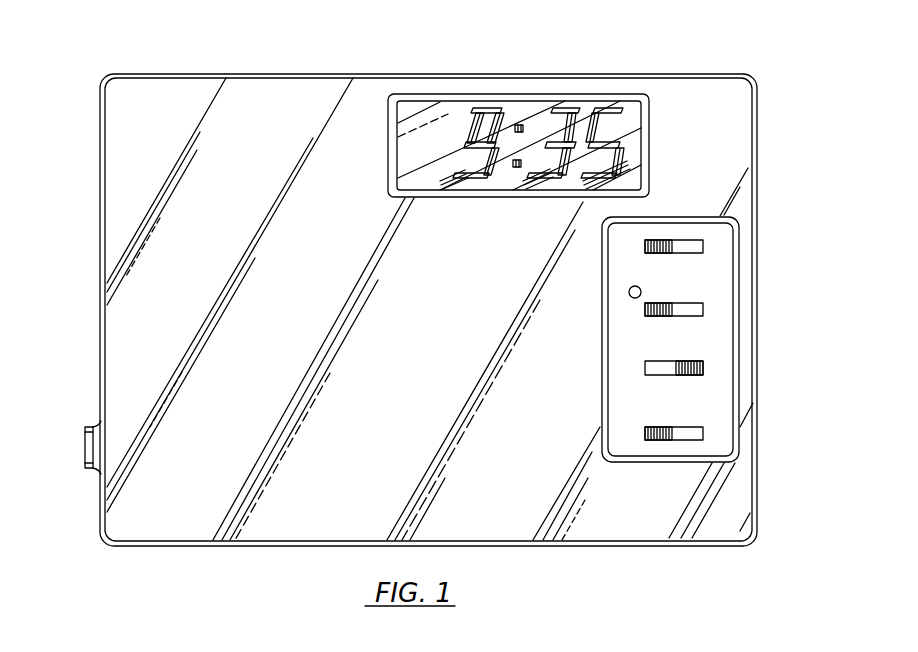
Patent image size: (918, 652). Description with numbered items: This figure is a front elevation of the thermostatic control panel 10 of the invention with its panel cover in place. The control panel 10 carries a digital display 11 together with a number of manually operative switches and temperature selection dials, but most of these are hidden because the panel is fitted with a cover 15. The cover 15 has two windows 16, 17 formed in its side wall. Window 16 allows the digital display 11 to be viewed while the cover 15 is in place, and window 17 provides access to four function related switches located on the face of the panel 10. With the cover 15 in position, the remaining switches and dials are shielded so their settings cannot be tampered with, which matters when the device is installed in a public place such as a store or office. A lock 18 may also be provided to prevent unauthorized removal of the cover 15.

The control panel 10 is at (517, 57).
The digital display 11 is at (428, 122).
The cover 15 is at (297, 98).
The window 16 is at (621, 96).
The window 17 is at (739, 252).
The lock 18 is at (85, 440).